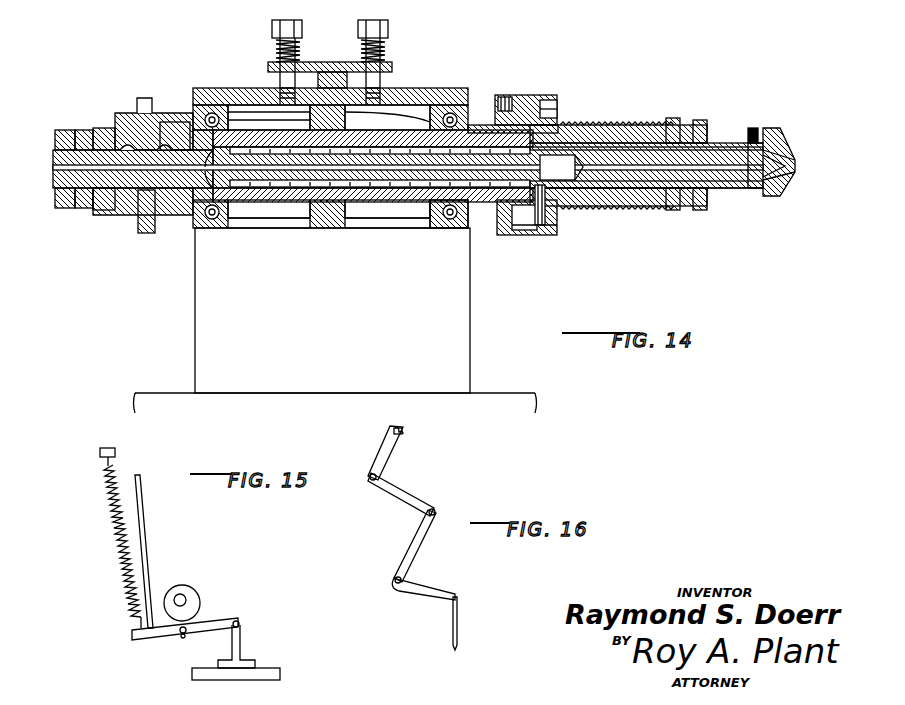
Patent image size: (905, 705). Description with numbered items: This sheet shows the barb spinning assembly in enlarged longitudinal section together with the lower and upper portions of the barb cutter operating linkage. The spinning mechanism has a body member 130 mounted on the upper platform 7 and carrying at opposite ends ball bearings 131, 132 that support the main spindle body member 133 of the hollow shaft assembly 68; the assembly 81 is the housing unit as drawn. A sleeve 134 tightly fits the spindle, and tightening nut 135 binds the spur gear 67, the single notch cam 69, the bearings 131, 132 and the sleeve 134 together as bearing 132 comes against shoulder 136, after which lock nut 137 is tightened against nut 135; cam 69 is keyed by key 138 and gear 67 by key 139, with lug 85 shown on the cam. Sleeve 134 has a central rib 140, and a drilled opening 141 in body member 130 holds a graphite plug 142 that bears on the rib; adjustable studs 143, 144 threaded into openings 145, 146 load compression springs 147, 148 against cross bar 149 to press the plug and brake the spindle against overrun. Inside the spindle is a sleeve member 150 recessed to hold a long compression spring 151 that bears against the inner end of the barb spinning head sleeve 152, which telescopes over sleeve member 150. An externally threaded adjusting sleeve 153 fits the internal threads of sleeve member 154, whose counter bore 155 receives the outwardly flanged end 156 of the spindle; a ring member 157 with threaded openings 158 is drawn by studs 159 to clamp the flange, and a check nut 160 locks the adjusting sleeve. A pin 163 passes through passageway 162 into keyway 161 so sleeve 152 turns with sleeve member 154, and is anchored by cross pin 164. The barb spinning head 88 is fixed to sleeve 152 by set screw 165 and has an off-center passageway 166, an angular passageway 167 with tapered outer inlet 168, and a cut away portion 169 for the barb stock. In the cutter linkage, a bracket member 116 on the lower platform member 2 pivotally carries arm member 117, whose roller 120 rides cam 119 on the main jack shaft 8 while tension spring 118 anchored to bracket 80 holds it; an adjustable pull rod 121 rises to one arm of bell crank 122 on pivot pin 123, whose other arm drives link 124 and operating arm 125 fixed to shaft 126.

In FIG. 15, the lower platform member 2 is at (262, 668).
In FIG. 14, the upper platform 7 is at (505, 393).
In FIG. 15, the main jack shaft 8 is at (185, 598).
In FIG. 14, the spur gear 67 is at (128, 113).
In FIG. 14, the hollow shaft assembly 68 is at (53, 178).
In FIG. 14, the single notch cam 69 is at (145, 233).
In FIG. 15, the bracket 80 is at (108, 448).
In FIG. 14, the housing assembly 81 is at (206, 86).
In FIG. 14, the lug 85 is at (145, 98).
In FIG. 14, the barb spinning head 88 is at (770, 196).
In FIG. 15, the bracket member 116 is at (240, 635).
In FIG. 15, the arm member 117 is at (215, 620).
In FIG. 15, the tension spring 118 is at (112, 468).
In FIG. 15, the cam 119 is at (173, 590).
In FIG. 15, the roller 120 is at (180, 636).
In FIG. 15, the adjustable pull rod 121 is at (141, 490).
In FIG. 16, the adjustable pull rod 121 is at (457, 622).
In FIG. 16, the bell crank 122 is at (437, 590).
In FIG. 16, the pivot pin 123 is at (408, 568).
In FIG. 16, the link 124 is at (412, 490).
In FIG. 16, the operating arm 125 is at (392, 458).
In FIG. 16, the shaft 126 is at (402, 432).
In FIG. 14, the body member 130 is at (470, 330).
In FIG. 14, the ball bearing 131 is at (193, 228).
In FIG. 14, the ball bearing 132 is at (470, 228).
In FIG. 14, the main spindle body member 133 is at (505, 95).
In FIG. 14, the sleeve 134 is at (470, 130).
In FIG. 14, the nut 135 is at (82, 130).
In FIG. 14, the shoulder 136 is at (490, 130).
In FIG. 14, the lock nut 137 is at (60, 130).
In FIG. 14, the key 138 is at (172, 125).
In FIG. 14, the key 139 is at (105, 128).
In FIG. 14, the central rib 140 is at (445, 105).
In FIG. 14, the drilled opening 141 is at (345, 80).
In FIG. 14, the graphite plug 142 is at (320, 72).
In FIG. 14, the adjustable stud 143 is at (290, 20).
In FIG. 14, the adjustable stud 144 is at (378, 20).
In FIG. 14, the opening 145 is at (275, 88).
In FIG. 14, the opening 146 is at (395, 90).
In FIG. 14, the compression spring 147 is at (276, 50).
In FIG. 14, the compression spring 148 is at (385, 50).
In FIG. 14, the cross bar 149 is at (392, 66).
In FIG. 14, the sleeve member 150 is at (375, 218).
In FIG. 14, the long compression spring 151 is at (300, 218).
In FIG. 14, the barb spinning head sleeve 152 is at (715, 143).
In FIG. 14, the adjusting sleeve 153 is at (700, 120).
In FIG. 14, the sleeve member 154 is at (605, 125).
In FIG. 14, the counter bore 155 is at (560, 128).
In FIG. 14, the outwardly flanged end 156 is at (512, 100).
In FIG. 14, the ring member 157 is at (515, 235).
In FIG. 14, the threaded openings 158 is at (548, 100).
In FIG. 14, the studs 159 is at (557, 110).
In FIG. 14, the check nut 160 is at (672, 118).
In FIG. 14, the keyway 161 is at (545, 195).
In FIG. 14, the passageway 162 is at (545, 210).
In FIG. 14, the pin 163 is at (545, 222).
In FIG. 14, the cross pin 164 is at (535, 232).
In FIG. 14, the set screw 165 is at (753, 128).
In FIG. 14, the passageway 166 is at (795, 172).
In FIG. 14, the angular passageway 167 is at (790, 150).
In FIG. 14, the tapered outer inlet 168 is at (772, 128).
In FIG. 14, the cut away portion 169 is at (785, 166).